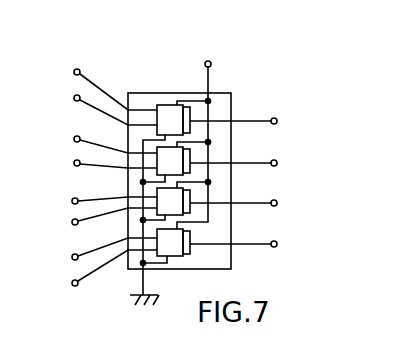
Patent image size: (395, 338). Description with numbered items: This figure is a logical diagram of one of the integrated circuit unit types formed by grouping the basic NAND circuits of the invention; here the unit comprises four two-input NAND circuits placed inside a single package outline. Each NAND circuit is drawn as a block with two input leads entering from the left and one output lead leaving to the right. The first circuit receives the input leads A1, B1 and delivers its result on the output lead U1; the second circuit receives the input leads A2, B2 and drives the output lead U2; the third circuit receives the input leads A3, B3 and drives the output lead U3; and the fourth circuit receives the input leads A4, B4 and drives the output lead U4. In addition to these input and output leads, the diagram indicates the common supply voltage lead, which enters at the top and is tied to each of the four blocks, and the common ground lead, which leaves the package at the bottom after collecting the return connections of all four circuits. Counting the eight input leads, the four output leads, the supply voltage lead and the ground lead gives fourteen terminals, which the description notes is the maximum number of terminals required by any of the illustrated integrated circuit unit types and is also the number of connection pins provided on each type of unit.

The input lead A1 is at (92, 83).
The input lead B1 is at (92, 104).
The input lead A2 is at (92, 138).
The input lead B2 is at (92, 161).
The input lead A3 is at (94, 199).
The input lead B3 is at (94, 221).
The input lead A4 is at (94, 253).
The input lead B4 is at (94, 272).
The output lead U1 is at (249, 122).
The output lead U2 is at (249, 163).
The output lead U3 is at (249, 203).
The output lead U4 is at (249, 244).